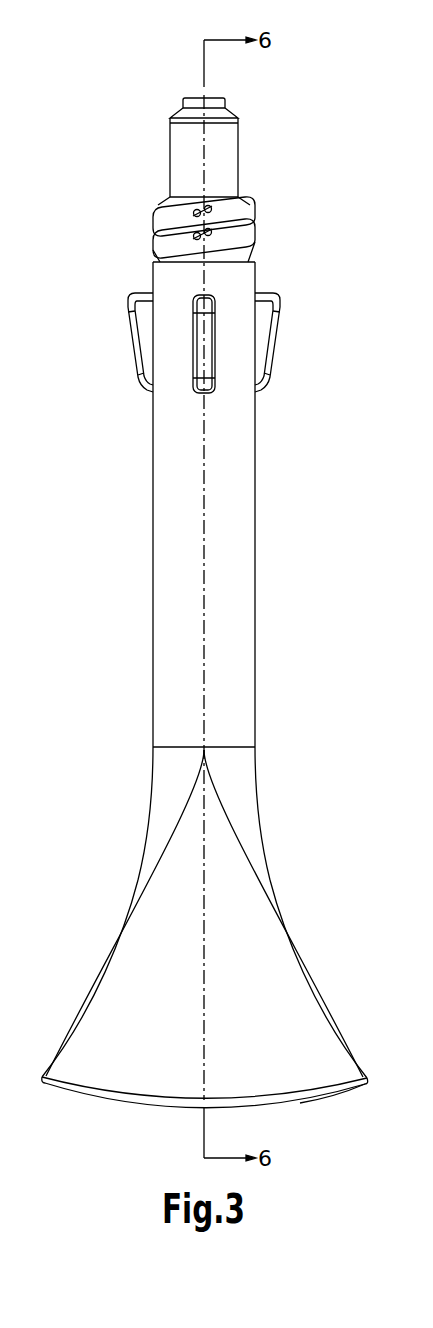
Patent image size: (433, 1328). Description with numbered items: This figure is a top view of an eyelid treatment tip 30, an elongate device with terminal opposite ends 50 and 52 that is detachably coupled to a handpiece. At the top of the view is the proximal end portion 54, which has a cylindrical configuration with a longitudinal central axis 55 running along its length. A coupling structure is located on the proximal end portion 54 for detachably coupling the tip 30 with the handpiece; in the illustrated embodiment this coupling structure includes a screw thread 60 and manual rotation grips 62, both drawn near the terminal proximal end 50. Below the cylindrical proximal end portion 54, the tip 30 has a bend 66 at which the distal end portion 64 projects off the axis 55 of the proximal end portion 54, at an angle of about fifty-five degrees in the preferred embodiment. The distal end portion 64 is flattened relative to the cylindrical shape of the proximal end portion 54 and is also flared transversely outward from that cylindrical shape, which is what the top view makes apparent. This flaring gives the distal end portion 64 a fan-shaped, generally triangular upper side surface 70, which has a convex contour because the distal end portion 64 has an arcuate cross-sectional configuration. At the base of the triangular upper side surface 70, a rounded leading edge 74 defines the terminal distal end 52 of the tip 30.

The tip 30 is at (114, 424).
The terminal proximal end 50 is at (197, 97).
The screw thread 60 is at (154, 210).
The manual rotation grips 62 is at (194, 296).
The proximal end portion 54 is at (153, 515).
The longitudinal central axis 55 is at (203, 580).
The bend 66 is at (150, 808).
The distal end portion 64 is at (133, 889).
The triangular upper side surface 70 is at (128, 1028).
The terminal distal end 52 is at (154, 1108).
The rounded leading edge 74 is at (302, 1104).